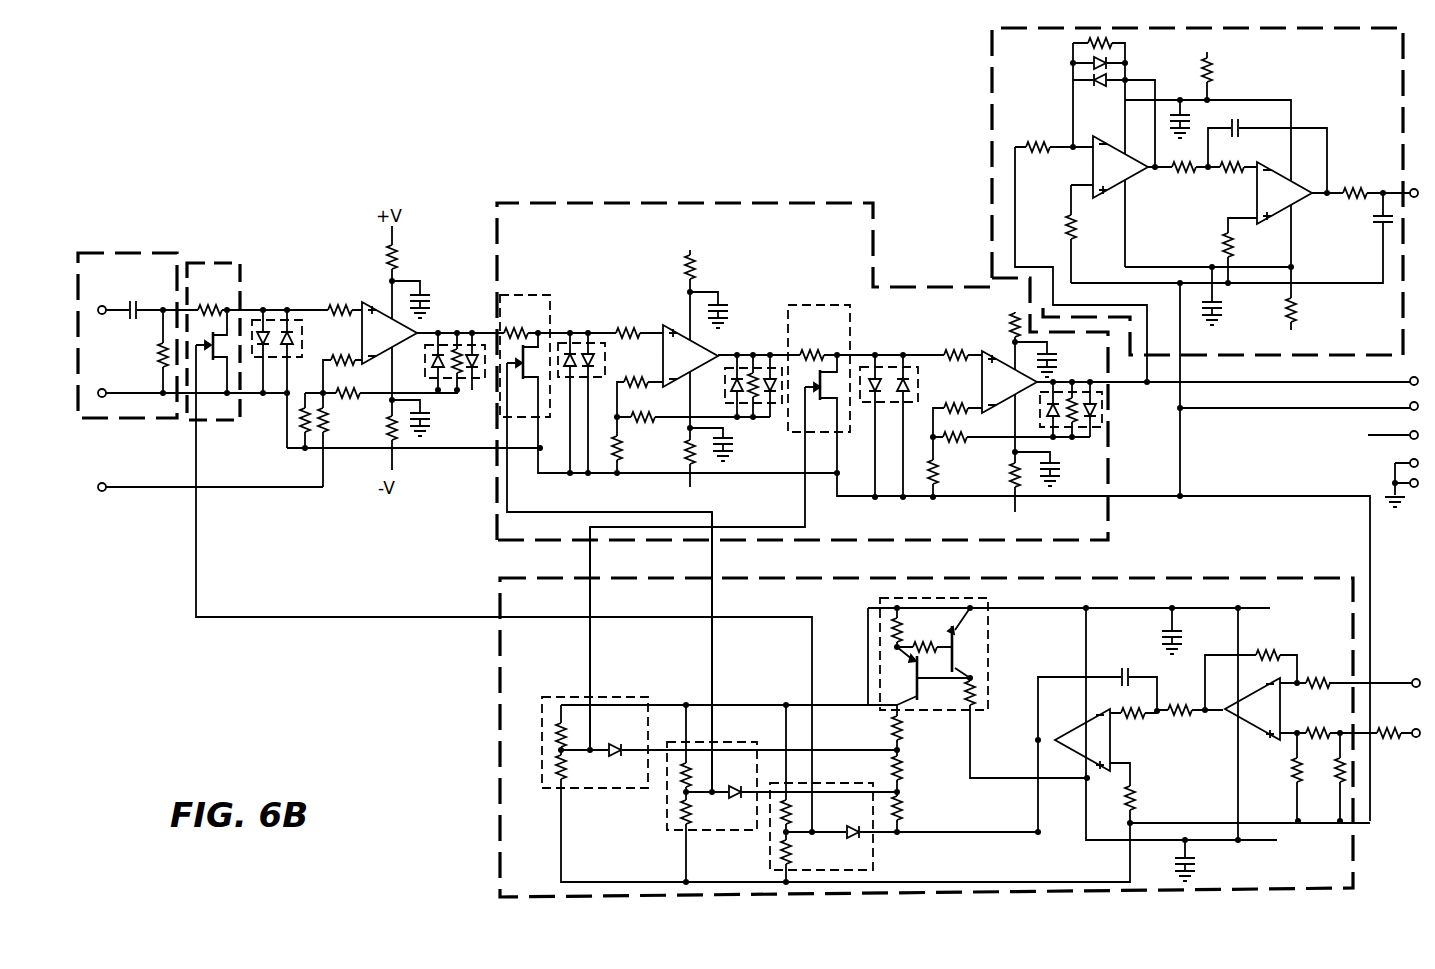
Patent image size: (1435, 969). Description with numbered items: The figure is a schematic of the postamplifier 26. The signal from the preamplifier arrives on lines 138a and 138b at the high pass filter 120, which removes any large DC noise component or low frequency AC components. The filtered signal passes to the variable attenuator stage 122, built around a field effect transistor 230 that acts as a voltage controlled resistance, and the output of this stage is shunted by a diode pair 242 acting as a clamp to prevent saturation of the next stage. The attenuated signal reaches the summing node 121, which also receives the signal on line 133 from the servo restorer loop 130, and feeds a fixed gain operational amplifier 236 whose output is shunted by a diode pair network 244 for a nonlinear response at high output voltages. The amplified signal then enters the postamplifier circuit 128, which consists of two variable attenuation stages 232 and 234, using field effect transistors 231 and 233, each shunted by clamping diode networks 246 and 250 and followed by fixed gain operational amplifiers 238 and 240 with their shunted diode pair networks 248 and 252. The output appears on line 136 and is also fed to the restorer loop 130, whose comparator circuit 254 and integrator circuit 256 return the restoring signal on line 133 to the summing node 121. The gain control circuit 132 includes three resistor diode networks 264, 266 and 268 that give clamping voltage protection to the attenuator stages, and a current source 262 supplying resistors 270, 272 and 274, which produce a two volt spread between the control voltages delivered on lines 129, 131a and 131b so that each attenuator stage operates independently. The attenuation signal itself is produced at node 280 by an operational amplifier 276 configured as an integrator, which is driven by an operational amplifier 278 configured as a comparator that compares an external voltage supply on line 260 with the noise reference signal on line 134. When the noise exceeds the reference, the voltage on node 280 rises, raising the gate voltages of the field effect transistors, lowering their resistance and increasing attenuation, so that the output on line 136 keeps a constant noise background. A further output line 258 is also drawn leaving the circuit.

The postamplifier 26 is at (612, 189).
The high pass filter 120 is at (182, 317).
The summing node 121 is at (328, 401).
The variable attenuator stage 122 is at (214, 338).
The postamplifier circuit 128 is at (718, 201).
The line 129 is at (260, 617).
The servo restorer loop 130 is at (1192, 28).
The line 131a is at (594, 641).
The line 131b is at (716, 641).
The gain control circuit 132 is at (500, 827).
The line 133 is at (152, 487).
The line 134 is at (1401, 681).
The line 136 is at (1393, 381).
The line 138a is at (120, 307).
The line 138b is at (122, 391).
The field effect transistor 230 is at (218, 363).
The field effect transistor 231 is at (544, 347).
The variable attenuation stage 232 is at (547, 334).
The field effect transistor 233 is at (814, 394).
The variable attenuation stage 234 is at (799, 360).
The fixed gain operational amplifier 236 is at (378, 318).
The fixed gain operational amplifier 238 is at (680, 343).
The fixed gain operational amplifier 240 is at (990, 386).
The diode pair 242 is at (304, 341).
The diode pair network 244 is at (443, 384).
The clamping diode network 246 is at (605, 360).
The diode pair network 248 is at (749, 368).
The clamping diode network 250 is at (882, 367).
The diode pair network 252 is at (1081, 392).
The comparator circuit 254 is at (1138, 170).
The integrator circuit 256 is at (1276, 194).
The output line 258 is at (1292, 406).
The line 260 is at (1394, 743).
The current source 262 is at (989, 653).
The resistor diode network 264 is at (565, 697).
The resistor diode network 266 is at (746, 731).
The resistor diode network 268 is at (858, 778).
The resistor 270 is at (905, 731).
The resistor 272 is at (905, 765).
The resistor 274 is at (905, 805).
The operational amplifier 276 is at (1112, 740).
The operational amplifier 278 is at (1272, 707).
The node 280 is at (1040, 833).